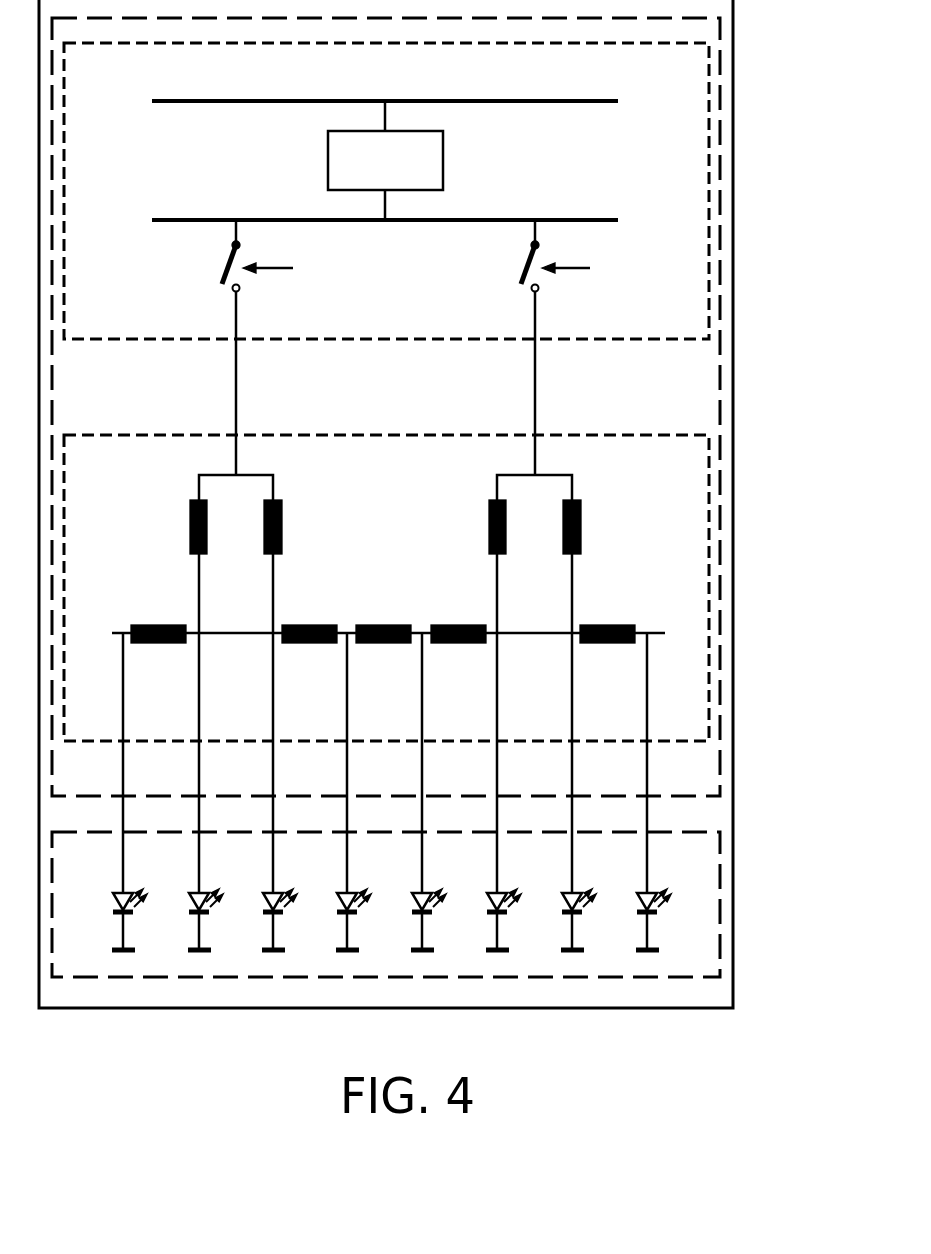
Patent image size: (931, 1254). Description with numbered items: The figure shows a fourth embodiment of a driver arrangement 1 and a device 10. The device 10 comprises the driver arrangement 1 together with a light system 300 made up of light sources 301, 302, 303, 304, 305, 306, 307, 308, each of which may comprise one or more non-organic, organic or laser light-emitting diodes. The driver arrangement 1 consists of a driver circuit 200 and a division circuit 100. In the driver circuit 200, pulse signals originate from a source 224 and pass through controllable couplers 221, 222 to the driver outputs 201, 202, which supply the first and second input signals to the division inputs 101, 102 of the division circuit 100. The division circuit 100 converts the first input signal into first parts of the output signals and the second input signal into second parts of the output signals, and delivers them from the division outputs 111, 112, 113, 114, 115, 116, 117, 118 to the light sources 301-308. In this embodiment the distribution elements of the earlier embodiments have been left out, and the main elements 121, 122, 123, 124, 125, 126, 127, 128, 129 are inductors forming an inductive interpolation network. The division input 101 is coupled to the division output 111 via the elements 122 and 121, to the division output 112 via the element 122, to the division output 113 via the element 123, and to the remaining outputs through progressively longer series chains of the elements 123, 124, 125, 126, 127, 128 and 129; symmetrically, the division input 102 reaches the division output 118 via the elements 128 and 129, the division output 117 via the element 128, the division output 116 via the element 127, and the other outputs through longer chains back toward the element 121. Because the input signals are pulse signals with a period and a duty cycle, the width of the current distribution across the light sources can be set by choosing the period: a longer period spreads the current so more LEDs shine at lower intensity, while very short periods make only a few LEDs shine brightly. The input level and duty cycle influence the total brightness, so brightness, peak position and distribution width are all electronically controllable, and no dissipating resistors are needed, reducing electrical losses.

The driver arrangement 1 is at (720, 318).
The device 10 is at (722, 737).
The division circuit 100 is at (352, 435).
The driver circuit 200 is at (430, 340).
The light system 300 is at (720, 905).
The source 224 is at (404, 173).
The controllable coupler 221 is at (222, 266).
The controllable coupler 222 is at (521, 266).
The driver output 201 is at (236, 340).
The driver output 202 is at (535, 340).
The division input 101 is at (236, 435).
The division input 102 is at (535, 435).
The element 121 is at (160, 625).
The element 122 is at (190, 517).
The element 123 is at (282, 517).
The element 124 is at (313, 625).
The element 125 is at (384, 625).
The element 126 is at (451, 625).
The element 127 is at (489, 517).
The element 128 is at (581, 517).
The element 129 is at (623, 625).
The division output 111 is at (123, 710).
The division output 112 is at (199, 710).
The division output 113 is at (273, 710).
The division output 114 is at (347, 710).
The division output 115 is at (422, 710).
The division output 116 is at (497, 710).
The division output 117 is at (572, 710).
The division output 118 is at (647, 710).
The light source 301 is at (130, 893).
The light source 302 is at (206, 893).
The light source 303 is at (280, 893).
The light source 304 is at (354, 893).
The light source 305 is at (429, 893).
The light source 306 is at (504, 893).
The light source 307 is at (579, 893).
The light source 308 is at (654, 893).